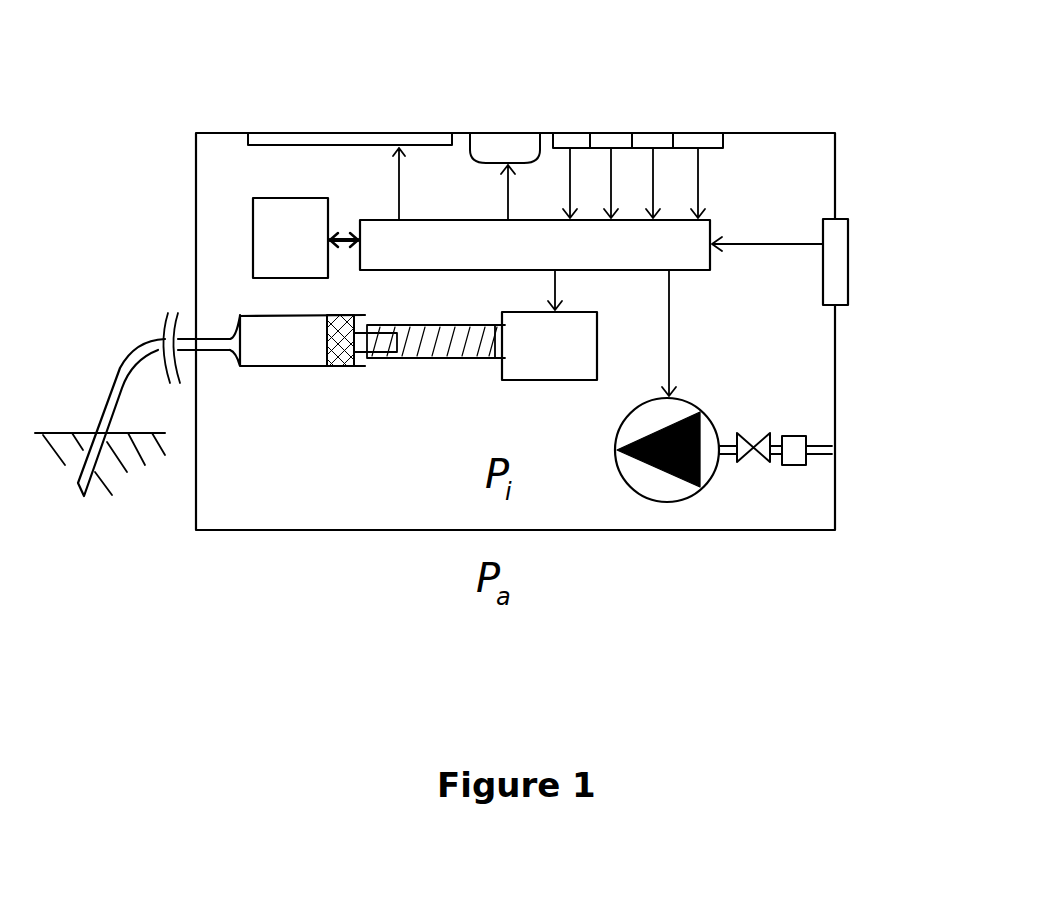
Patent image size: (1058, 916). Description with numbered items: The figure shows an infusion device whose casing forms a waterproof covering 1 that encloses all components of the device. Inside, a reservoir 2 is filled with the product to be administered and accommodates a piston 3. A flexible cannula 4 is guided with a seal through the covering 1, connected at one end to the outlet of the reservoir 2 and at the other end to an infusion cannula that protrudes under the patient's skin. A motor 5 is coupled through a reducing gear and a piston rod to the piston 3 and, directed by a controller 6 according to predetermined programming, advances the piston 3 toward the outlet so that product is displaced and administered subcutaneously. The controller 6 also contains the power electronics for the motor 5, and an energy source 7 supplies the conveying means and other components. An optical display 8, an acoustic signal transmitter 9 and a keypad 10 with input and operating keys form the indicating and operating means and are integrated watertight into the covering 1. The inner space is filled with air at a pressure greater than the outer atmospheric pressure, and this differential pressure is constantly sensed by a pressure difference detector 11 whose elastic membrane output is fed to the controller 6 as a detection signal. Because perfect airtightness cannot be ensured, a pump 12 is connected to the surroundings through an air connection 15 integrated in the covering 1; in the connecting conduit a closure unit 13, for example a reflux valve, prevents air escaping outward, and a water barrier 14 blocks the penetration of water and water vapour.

The waterproof covering 1 is at (196, 190).
The reservoir 2 is at (292, 355).
The piston 3 is at (345, 367).
The flexible cannula 4 is at (206, 347).
The motor 5 is at (549, 325).
The controller 6 is at (535, 245).
The energy source 7 is at (305, 238).
The optical display 8 is at (321, 134).
The acoustic signal transmitter 9 is at (507, 133).
The keypad 10 is at (618, 133).
The pressure difference detector 11 is at (838, 248).
The pump 12 is at (665, 495).
The closure unit 13 is at (757, 457).
The water barrier 14 is at (795, 466).
The air connection 15 is at (842, 450).